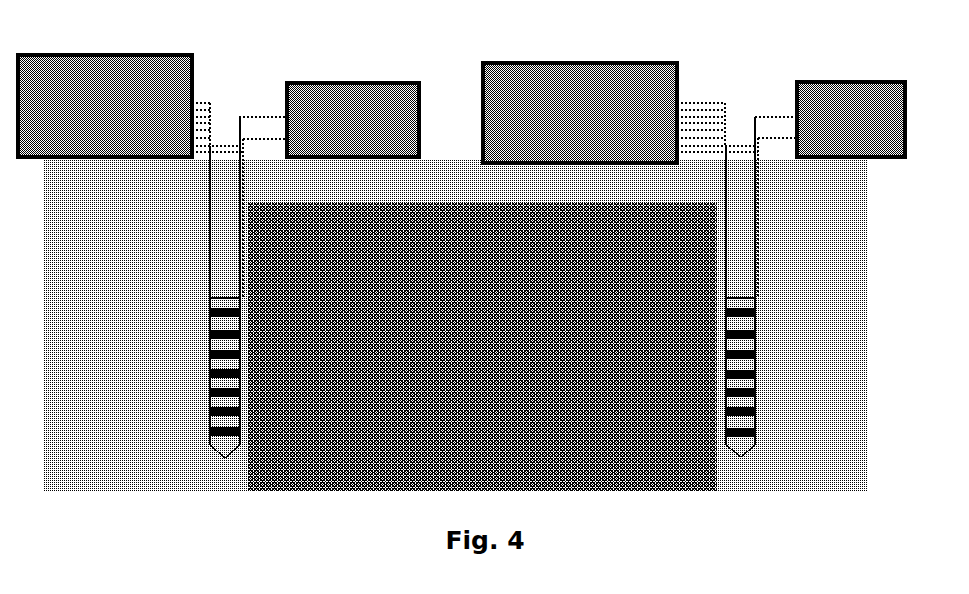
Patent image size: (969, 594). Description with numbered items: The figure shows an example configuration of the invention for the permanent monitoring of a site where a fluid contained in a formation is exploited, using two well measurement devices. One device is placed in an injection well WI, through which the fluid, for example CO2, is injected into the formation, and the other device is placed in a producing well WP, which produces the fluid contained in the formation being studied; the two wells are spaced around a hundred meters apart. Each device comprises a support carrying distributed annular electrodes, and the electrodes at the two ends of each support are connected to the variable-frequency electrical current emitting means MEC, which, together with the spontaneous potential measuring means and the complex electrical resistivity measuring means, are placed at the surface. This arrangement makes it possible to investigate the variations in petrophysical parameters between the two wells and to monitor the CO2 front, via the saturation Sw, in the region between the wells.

The injection well WI is at (226, 285).
The producing well WP is at (741, 293).
The water saturation region of reservoir Sw is at (482, 347).
The variable-frequency electrical current emitting means MEC is at (596, 119).